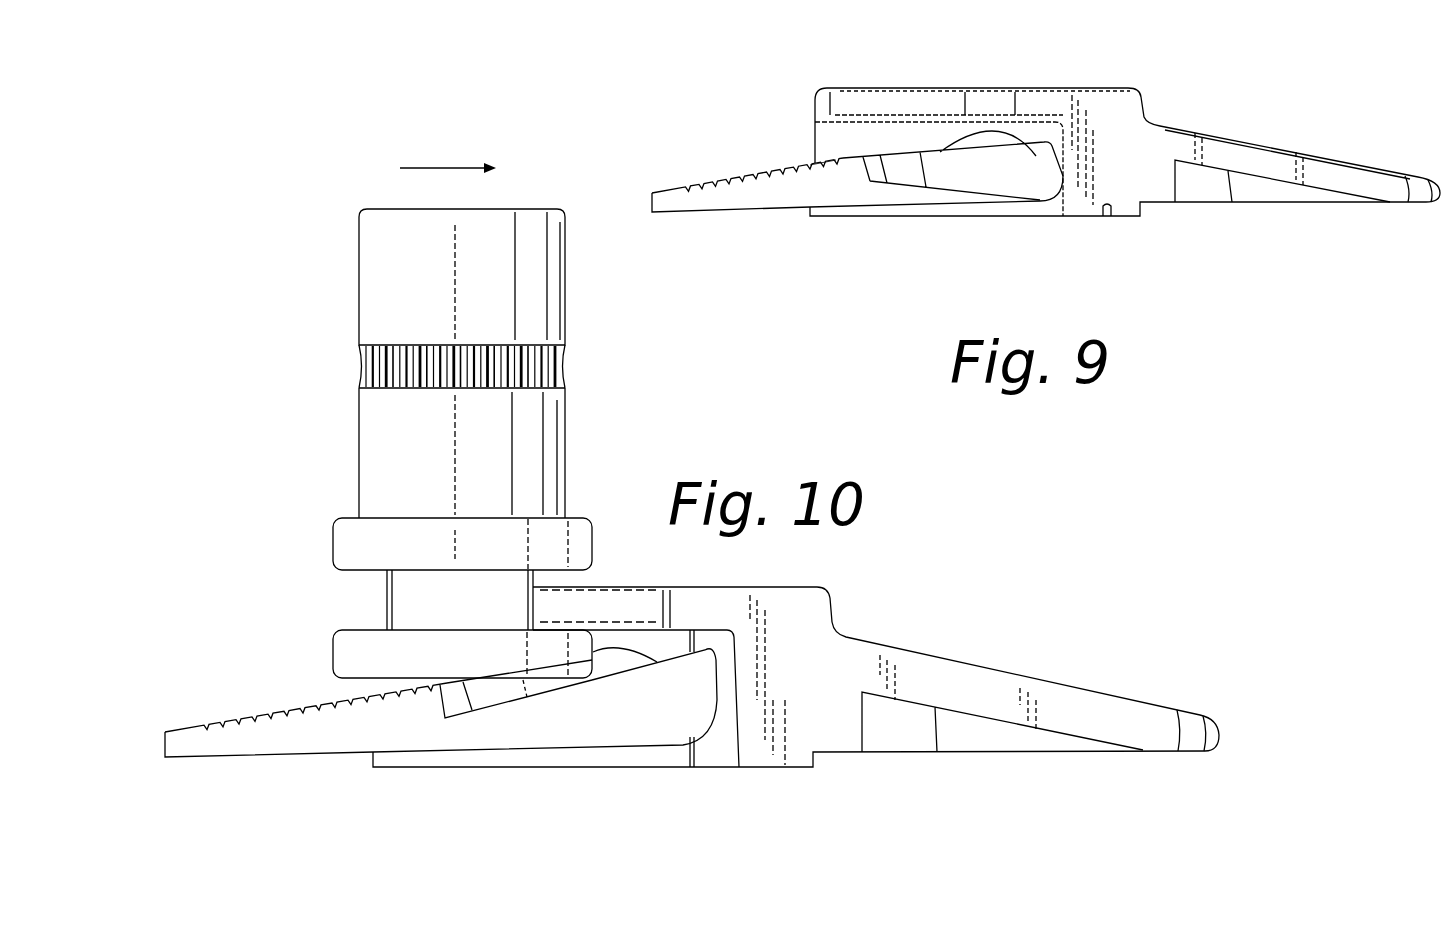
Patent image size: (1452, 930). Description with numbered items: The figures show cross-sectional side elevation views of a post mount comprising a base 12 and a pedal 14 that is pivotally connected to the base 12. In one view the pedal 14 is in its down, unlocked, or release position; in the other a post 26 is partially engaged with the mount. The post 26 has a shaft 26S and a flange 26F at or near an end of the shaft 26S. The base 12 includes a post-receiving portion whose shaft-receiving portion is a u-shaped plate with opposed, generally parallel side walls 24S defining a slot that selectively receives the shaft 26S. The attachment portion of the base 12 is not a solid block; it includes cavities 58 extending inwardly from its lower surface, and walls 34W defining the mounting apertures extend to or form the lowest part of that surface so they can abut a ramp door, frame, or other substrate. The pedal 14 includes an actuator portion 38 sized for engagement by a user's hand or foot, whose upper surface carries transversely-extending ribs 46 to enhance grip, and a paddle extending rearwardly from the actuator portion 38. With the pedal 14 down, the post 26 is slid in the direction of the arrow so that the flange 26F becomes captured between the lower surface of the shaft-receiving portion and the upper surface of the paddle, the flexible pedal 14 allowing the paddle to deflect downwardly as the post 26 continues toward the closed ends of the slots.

In FIG. 9, the base 12 is at (1136, 168).
In FIG. 10, the base 12 is at (796, 677).
In FIG. 9, the pedal 14 is at (846, 221).
In FIG. 10, the pedal 14 is at (441, 702).
In FIG. 9, the side walls 24S is at (906, 106).
In FIG. 10, the post 26 is at (434, 443).
In FIG. 10, the shaft 26S is at (367, 588).
In FIG. 10, the flange 26F is at (306, 652).
In FIG. 9, the walls defining the apertures 34W is at (1318, 214).
In FIG. 9, the actuator portion 38 is at (760, 204).
In FIG. 9, the transversely-extending ribs 46 is at (838, 180).
In FIG. 9, the cavities 58 is at (1198, 214).